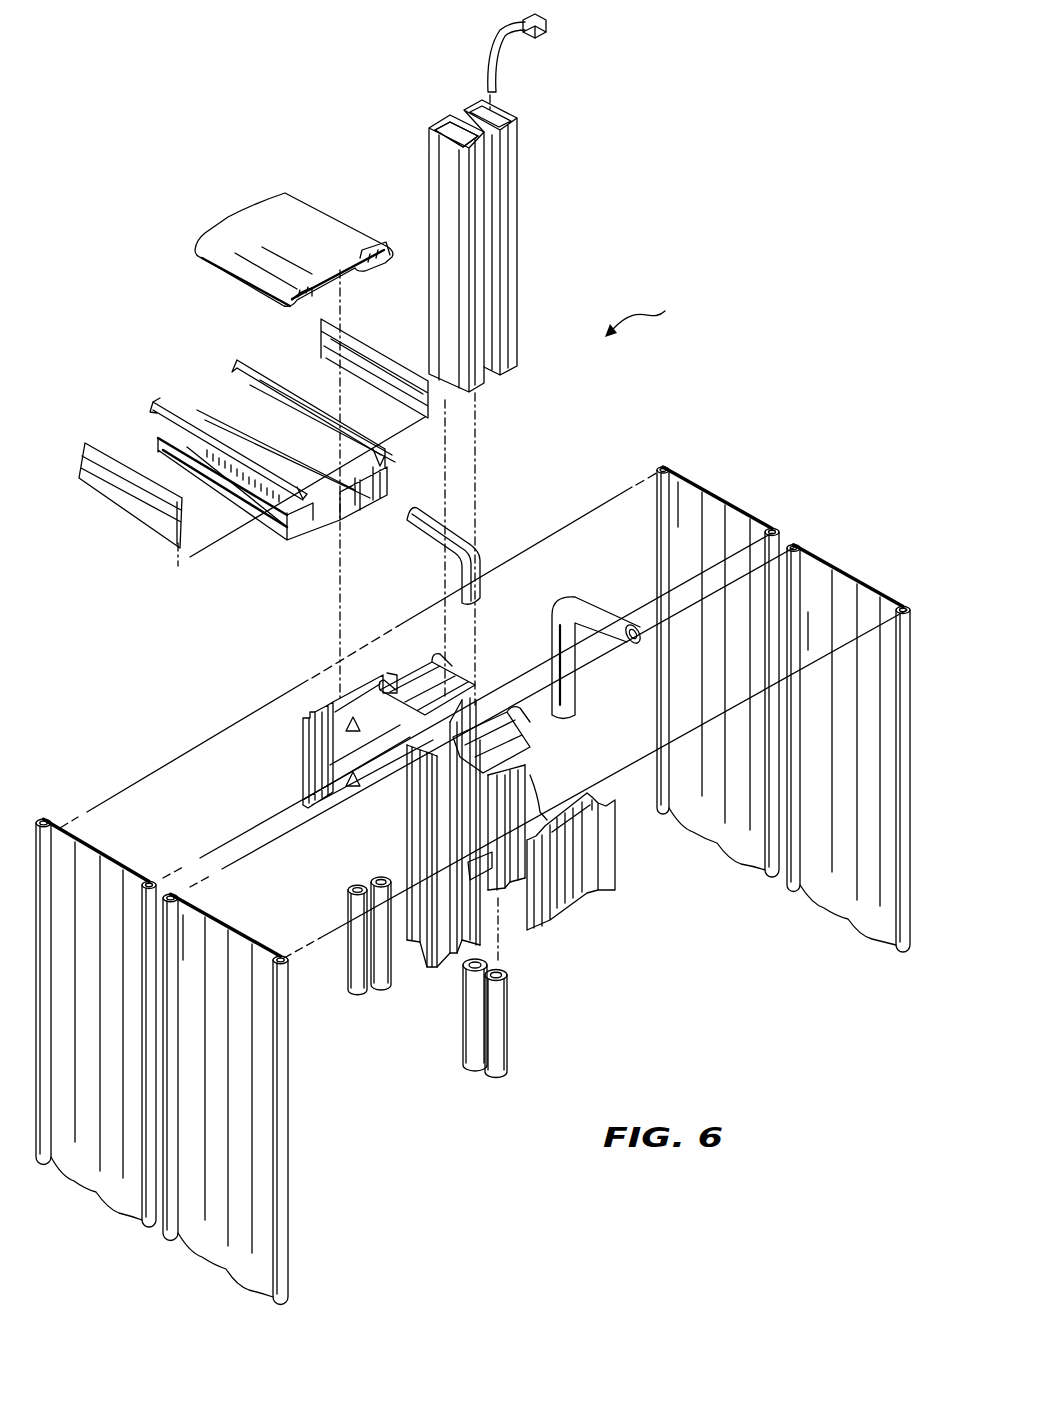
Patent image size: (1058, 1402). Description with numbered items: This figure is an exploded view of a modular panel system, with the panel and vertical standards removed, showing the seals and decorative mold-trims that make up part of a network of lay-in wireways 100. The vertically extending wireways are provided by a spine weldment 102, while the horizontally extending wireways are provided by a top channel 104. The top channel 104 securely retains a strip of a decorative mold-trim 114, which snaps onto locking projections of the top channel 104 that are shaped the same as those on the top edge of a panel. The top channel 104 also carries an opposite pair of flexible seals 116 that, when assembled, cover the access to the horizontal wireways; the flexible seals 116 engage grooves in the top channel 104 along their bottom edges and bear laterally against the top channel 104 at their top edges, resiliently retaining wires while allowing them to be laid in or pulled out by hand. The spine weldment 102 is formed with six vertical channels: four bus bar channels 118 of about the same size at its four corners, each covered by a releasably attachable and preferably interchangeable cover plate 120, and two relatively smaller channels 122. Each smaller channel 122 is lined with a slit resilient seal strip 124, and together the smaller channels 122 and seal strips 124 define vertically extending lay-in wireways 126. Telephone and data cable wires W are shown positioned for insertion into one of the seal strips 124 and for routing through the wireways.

The network of lay-in wireways 100 is at (654, 308).
The spine weldment 102 is at (447, 975).
The top channel 104 is at (203, 400).
The decorative mold-trim 114 is at (262, 215).
The flexible seals 116 is at (318, 326).
The bus bar channels 118 is at (320, 684).
The cover plate 120 is at (90, 850).
The smaller channels 122 is at (502, 688).
The slit resilient seal strip 124 is at (517, 228).
The vertically extending lay-in wireways 126 is at (442, 112).
The telephone and data cable wires W is at (500, 57).